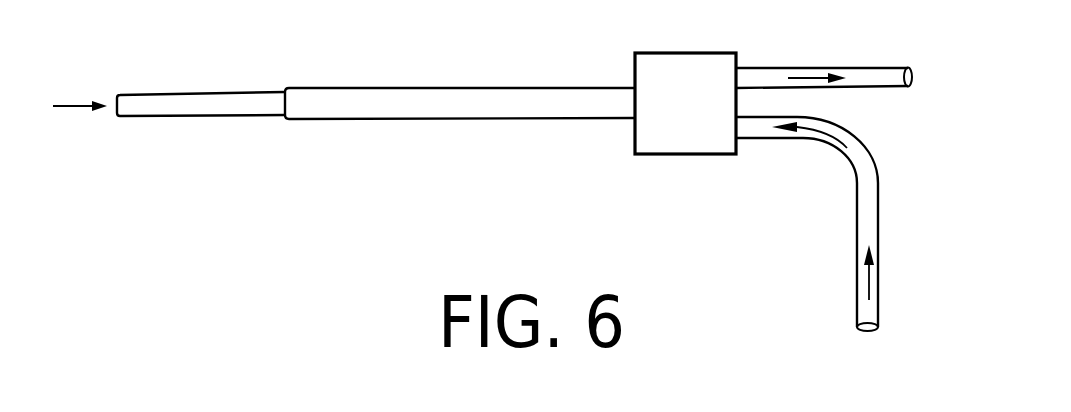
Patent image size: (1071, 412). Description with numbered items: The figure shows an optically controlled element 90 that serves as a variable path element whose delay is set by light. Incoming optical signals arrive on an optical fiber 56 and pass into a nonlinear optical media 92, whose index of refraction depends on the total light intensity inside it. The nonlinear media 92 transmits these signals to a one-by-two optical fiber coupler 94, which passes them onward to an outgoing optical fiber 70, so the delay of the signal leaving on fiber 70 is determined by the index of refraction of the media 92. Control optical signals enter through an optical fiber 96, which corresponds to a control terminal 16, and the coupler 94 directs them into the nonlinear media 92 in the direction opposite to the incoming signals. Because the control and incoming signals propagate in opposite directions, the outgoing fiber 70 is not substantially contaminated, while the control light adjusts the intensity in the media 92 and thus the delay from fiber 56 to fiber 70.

The optical fiber 56 is at (194, 94).
The nonlinear optical media 92 is at (447, 88).
The 1×2 optical fiber coupler 94 is at (677, 53).
The outgoing optical fiber 70 is at (851, 68).
The optical fiber 96 is at (857, 238).
The control terminal 16 is at (868, 332).
The optically controlled element 90 is at (266, 204).